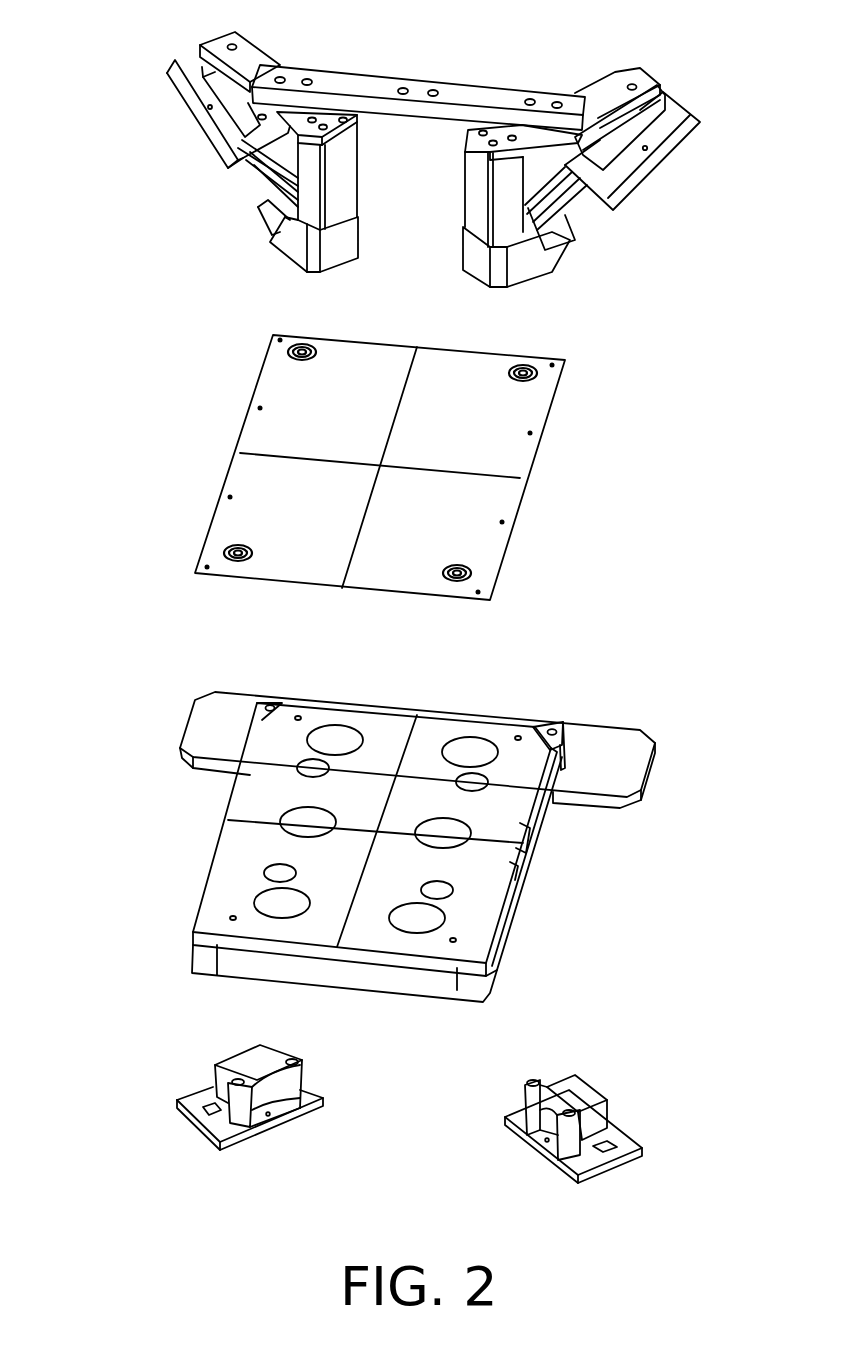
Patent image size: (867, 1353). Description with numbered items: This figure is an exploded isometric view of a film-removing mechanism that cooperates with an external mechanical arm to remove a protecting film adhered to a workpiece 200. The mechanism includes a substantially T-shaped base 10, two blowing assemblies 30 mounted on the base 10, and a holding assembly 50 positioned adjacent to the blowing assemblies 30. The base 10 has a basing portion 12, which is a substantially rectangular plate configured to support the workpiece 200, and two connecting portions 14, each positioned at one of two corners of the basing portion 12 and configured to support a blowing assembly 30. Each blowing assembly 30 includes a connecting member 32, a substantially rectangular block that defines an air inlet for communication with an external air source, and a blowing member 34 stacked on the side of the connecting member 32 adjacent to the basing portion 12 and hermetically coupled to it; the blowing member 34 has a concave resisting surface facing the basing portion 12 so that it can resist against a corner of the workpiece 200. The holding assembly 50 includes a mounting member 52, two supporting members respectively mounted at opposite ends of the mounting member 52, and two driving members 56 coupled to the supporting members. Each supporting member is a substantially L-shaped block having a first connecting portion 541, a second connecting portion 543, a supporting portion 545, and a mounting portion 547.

The base 10 is at (186, 827).
The basing portion 12 is at (508, 902).
The connecting portion 14 is at (627, 740).
The blowing assembly 30 is at (186, 1063).
The connecting member 32 is at (252, 1060).
The blowing member 34 is at (280, 1060).
The holding assembly 50 is at (198, 170).
The mounting member 52 is at (363, 83).
The first connecting portion 541 is at (610, 90).
The second connecting portion 543 is at (503, 200).
The supporting portion 545 is at (533, 270).
The mounting portion 547 is at (640, 122).
The driving member 56 is at (647, 165).
The workpiece 200 is at (268, 433).